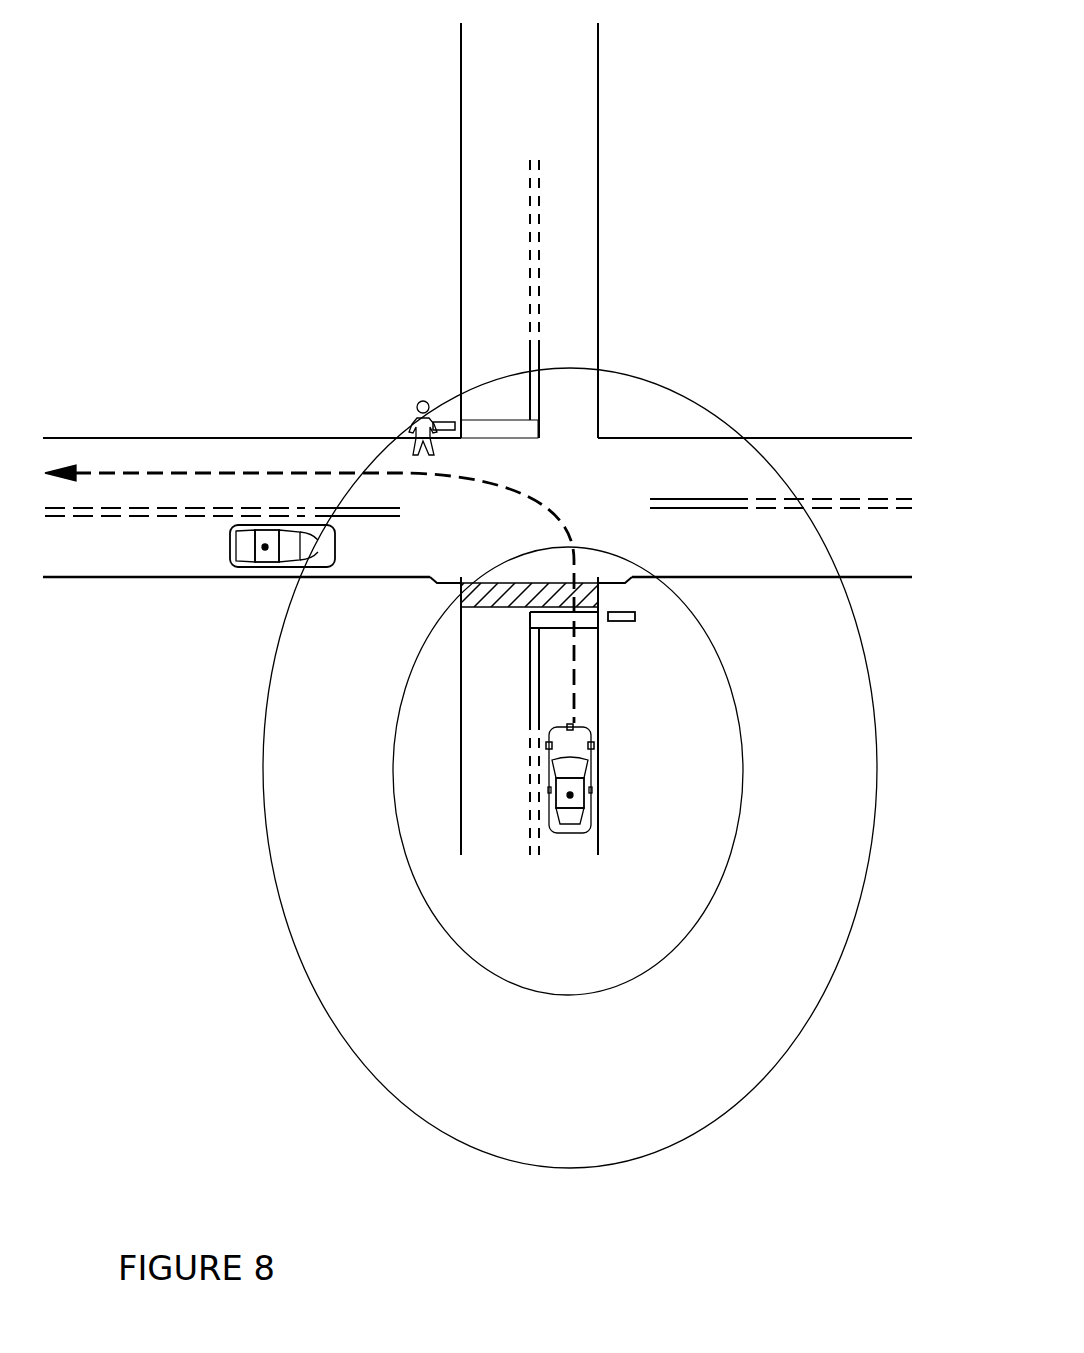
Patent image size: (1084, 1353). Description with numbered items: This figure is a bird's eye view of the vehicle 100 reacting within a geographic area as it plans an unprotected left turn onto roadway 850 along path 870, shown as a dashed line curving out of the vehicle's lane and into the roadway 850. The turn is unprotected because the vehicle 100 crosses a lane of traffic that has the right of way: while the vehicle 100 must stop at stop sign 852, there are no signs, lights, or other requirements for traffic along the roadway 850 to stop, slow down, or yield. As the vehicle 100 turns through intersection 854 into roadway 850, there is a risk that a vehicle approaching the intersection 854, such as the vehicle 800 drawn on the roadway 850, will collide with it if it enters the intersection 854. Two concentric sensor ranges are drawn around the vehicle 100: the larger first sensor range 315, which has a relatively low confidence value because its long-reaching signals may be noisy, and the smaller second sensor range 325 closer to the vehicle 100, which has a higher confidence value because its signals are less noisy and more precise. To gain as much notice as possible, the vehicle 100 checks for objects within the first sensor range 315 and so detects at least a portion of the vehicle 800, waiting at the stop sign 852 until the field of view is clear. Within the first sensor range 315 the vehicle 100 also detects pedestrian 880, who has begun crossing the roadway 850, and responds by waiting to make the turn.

The vehicle 100 is at (597, 783).
The first sensor range 315 is at (687, 422).
The second sensor range 325 is at (668, 882).
The vehicle 800 is at (257, 562).
The roadway 850 is at (373, 447).
The stop sign 852 is at (635, 618).
The intersection 854 is at (531, 439).
The path 870 is at (253, 473).
The pedestrian 880 is at (415, 402).